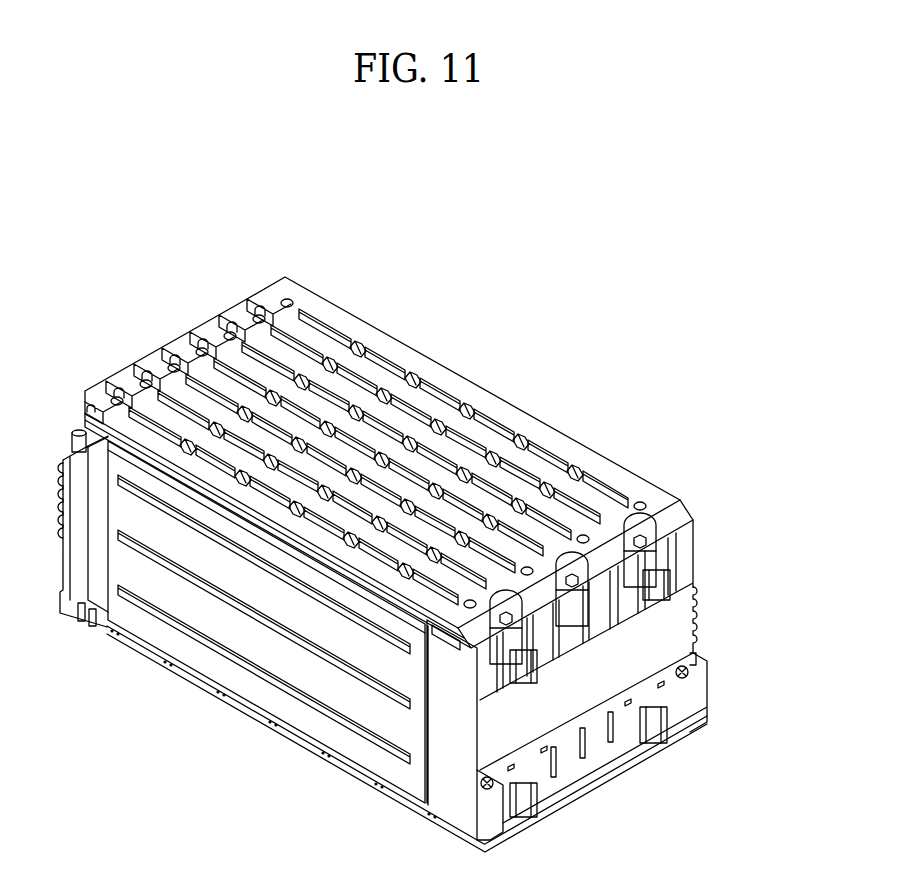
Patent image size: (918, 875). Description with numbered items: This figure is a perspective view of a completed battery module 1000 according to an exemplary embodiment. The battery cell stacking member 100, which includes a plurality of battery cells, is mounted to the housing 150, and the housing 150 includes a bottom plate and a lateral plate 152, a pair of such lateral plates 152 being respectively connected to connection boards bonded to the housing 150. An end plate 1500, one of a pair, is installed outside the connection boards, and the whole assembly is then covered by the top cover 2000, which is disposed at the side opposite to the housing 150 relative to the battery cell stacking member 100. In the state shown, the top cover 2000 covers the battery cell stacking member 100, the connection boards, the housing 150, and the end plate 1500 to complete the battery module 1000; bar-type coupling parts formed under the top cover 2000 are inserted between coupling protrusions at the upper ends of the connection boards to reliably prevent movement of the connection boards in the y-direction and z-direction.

The battery module 1000 is at (418, 241).
The top cover 2000 is at (424, 466).
The battery cell stacking member 100 is at (255, 642).
The end plate 1500 is at (644, 632).
The housing 150 is at (342, 763).
The lateral plate 152 is at (571, 775).